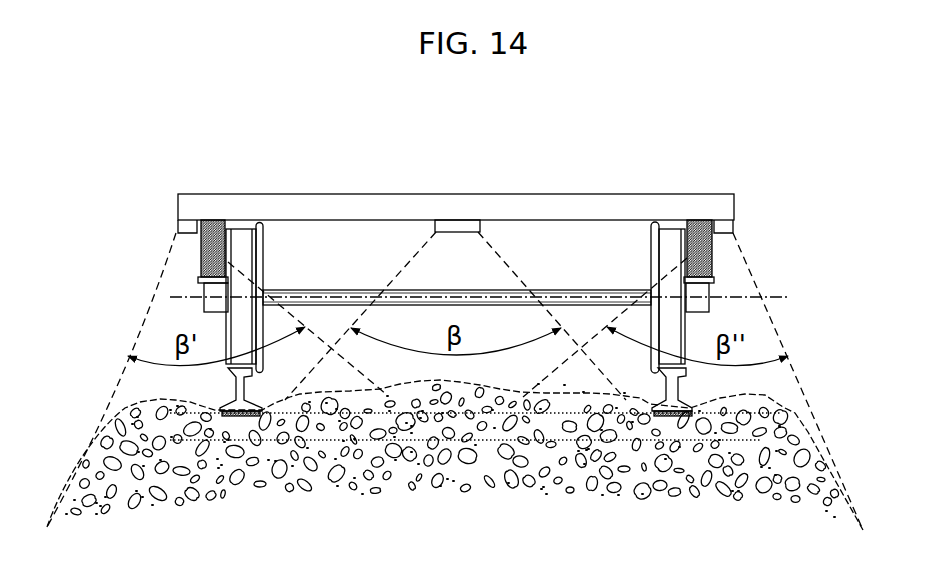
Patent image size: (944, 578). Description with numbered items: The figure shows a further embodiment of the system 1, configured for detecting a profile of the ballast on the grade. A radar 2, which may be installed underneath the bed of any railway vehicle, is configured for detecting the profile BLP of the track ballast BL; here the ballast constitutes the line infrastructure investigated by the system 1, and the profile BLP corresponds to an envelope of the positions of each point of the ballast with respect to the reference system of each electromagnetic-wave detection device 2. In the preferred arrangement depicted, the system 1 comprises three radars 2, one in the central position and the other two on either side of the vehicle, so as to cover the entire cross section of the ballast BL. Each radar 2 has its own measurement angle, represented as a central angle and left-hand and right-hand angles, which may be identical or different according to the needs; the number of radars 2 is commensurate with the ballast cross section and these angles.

The system 1 is at (467, 216).
The radar 2 is at (178, 229).
The track ballast BL is at (663, 483).
The profile of the track ballast BLP is at (790, 413).